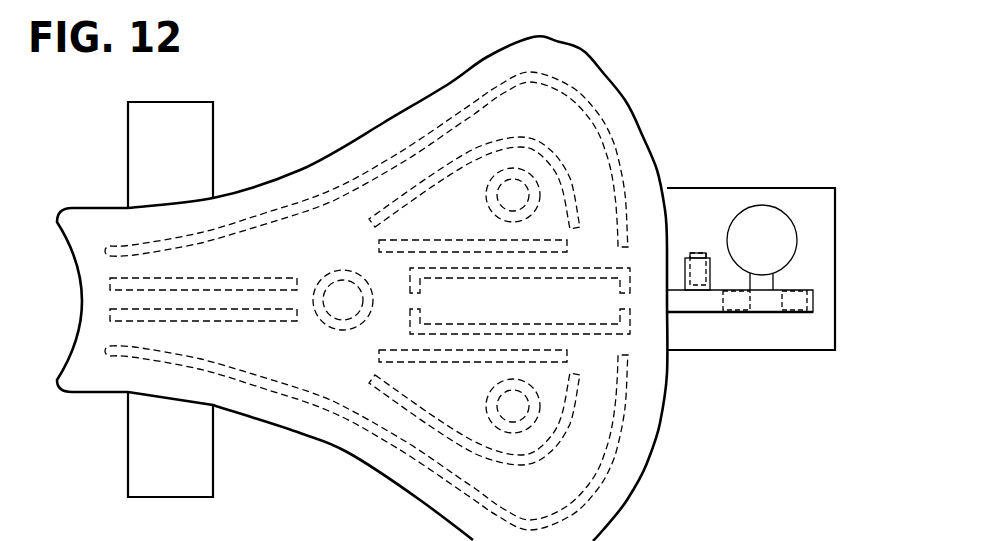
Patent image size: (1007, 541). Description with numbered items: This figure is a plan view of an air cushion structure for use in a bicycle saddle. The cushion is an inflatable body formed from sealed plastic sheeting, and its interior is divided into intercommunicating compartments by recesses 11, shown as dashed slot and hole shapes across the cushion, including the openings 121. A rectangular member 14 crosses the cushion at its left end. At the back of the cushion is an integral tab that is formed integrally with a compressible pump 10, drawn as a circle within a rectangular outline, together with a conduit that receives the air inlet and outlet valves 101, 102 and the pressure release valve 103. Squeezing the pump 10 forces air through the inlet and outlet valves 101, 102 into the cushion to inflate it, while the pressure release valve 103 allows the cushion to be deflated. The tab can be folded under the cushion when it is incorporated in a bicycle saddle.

The compressible pump 10 is at (761, 217).
The recesses 11 is at (449, 173).
The shaft / mounting bar 14 is at (206, 472).
The air inlet valve 101 is at (733, 310).
The air outlet valve 102 is at (795, 312).
The pressure release valve 103 is at (698, 294).
The holes 121 is at (513, 195).